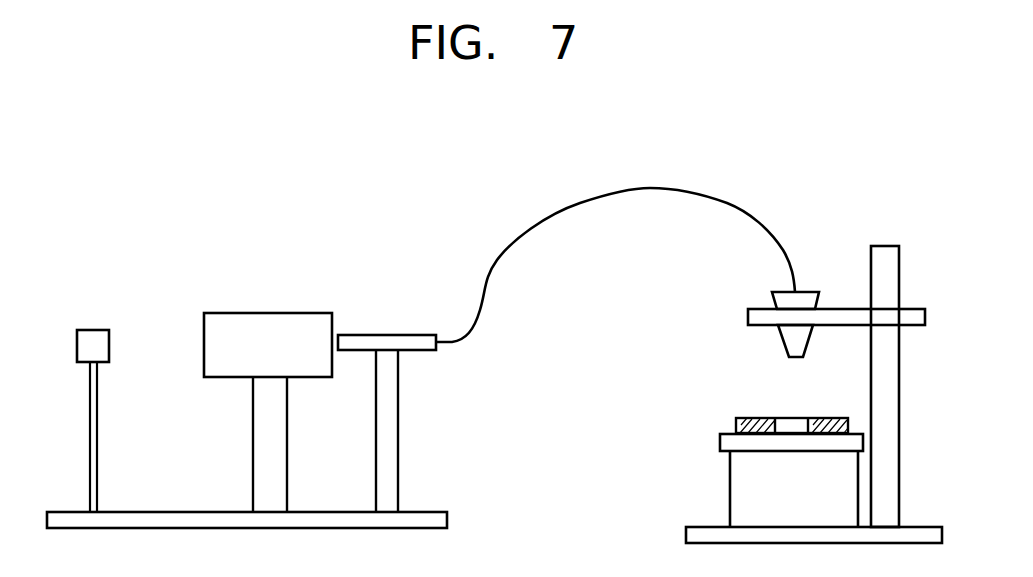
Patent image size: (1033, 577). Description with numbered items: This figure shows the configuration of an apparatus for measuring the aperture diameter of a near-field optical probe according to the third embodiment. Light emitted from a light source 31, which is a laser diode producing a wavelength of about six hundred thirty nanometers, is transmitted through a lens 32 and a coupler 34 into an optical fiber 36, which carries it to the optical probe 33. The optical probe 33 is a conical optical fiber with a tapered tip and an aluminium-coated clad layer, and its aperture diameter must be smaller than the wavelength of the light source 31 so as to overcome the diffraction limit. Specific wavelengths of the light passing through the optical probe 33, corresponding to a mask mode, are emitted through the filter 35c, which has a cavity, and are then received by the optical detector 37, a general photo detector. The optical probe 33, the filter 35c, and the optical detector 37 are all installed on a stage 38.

The light source 31 is at (92, 330).
The lens 32 is at (268, 313).
The optical probe 33 is at (812, 290).
The coupler 34 is at (387, 335).
The filter 35c is at (747, 417).
The optical fiber 36 is at (648, 188).
The optical detector 37 is at (720, 441).
The stage 38 is at (885, 246).